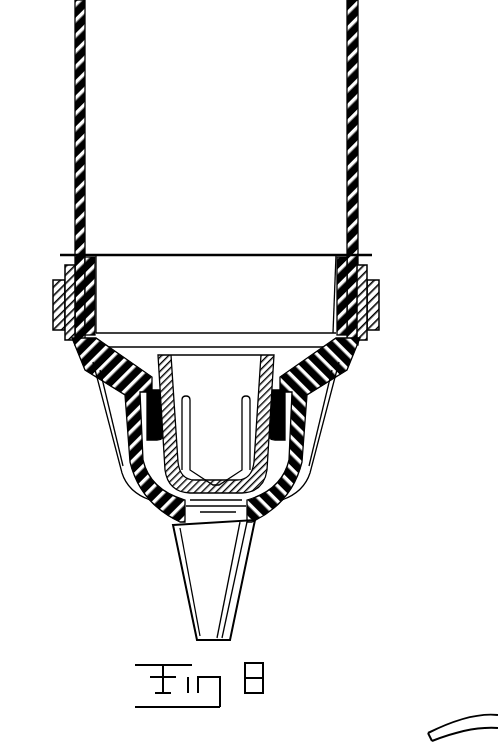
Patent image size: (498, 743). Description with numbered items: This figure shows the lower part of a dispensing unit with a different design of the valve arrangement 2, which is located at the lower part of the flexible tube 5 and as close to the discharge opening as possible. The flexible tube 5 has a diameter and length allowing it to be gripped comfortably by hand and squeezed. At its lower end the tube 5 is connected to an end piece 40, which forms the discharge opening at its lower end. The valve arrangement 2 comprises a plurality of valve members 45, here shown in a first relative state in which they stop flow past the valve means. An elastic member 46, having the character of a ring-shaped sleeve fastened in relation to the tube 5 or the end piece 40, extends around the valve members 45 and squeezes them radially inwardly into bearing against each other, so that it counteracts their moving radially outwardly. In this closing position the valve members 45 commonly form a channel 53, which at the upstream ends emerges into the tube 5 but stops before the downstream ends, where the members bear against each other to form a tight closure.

The flexible tube 5 is at (359, 114).
The valve arrangement 2 is at (150, 312).
The channel 53 is at (211, 375).
The valve members 45 is at (235, 395).
The elastic member 46 is at (297, 482).
The end piece 40 is at (148, 498).